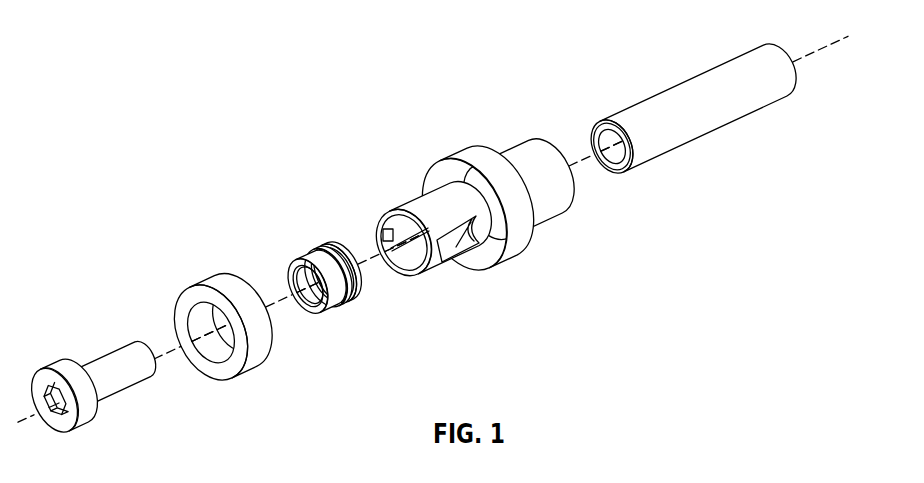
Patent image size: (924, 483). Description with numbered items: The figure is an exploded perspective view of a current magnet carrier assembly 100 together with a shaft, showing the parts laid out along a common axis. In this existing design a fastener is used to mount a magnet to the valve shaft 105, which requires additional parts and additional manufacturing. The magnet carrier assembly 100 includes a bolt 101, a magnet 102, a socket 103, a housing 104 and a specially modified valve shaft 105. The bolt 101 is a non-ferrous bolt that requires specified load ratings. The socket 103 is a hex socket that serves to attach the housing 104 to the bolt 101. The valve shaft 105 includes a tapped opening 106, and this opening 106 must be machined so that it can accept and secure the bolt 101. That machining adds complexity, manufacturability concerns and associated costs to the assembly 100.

The current magnet carrier assembly 100 is at (433, 226).
The bolt 101 is at (88, 332).
The magnet 102 is at (206, 255).
The socket 103 is at (325, 236).
The housing 104 is at (491, 122).
The valve shaft 105 is at (689, 125).
The tapped opening 106 is at (613, 152).